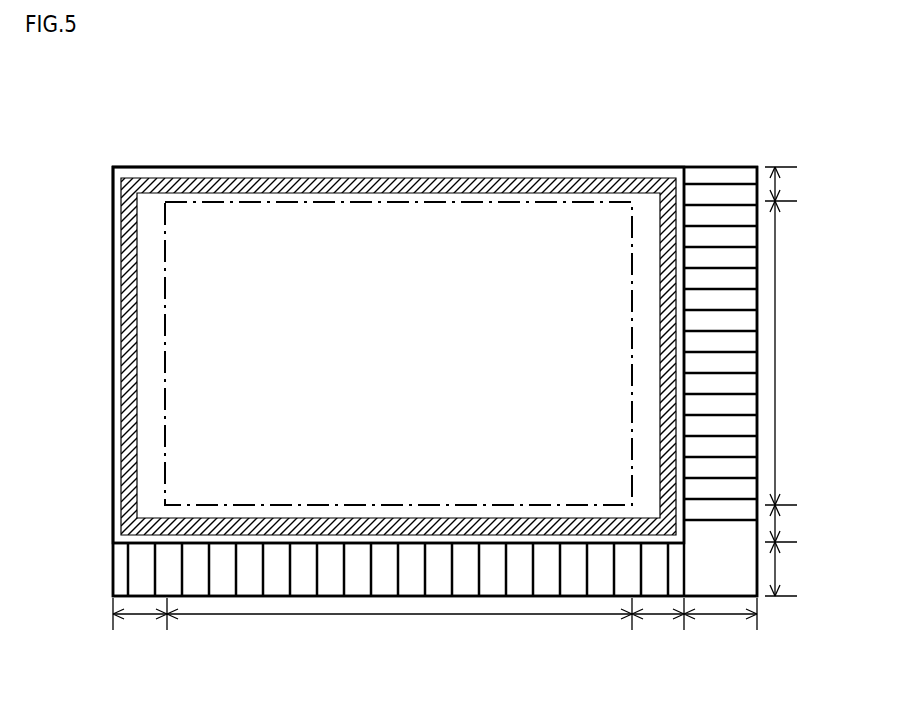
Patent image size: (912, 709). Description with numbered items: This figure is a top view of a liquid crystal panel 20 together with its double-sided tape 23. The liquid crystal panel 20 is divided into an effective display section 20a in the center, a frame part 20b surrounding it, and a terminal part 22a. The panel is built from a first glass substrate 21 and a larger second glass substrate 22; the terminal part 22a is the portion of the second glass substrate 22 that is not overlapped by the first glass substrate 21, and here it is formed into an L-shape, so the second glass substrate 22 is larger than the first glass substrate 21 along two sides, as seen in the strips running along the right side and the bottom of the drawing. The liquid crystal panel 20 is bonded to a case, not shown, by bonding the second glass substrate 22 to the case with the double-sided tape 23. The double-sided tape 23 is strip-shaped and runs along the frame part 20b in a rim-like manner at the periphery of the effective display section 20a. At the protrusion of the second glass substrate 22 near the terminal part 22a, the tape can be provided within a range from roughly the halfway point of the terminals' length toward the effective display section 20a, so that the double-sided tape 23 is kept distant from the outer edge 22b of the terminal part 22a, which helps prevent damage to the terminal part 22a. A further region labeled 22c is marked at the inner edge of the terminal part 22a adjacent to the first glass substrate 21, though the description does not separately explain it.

The liquid crystal panel 20 is at (130, 152).
The first glass substrate 21 is at (686, 194).
The second glass substrate 22 is at (748, 166).
The double-sided tape 23 is at (340, 178).
The effective display section 20a is at (777, 360).
The frame part 20b is at (783, 184).
The terminal part 22a is at (777, 568).
The outer edge 22b is at (770, 286).
The inner edge portion of frame 22c is at (699, 407).